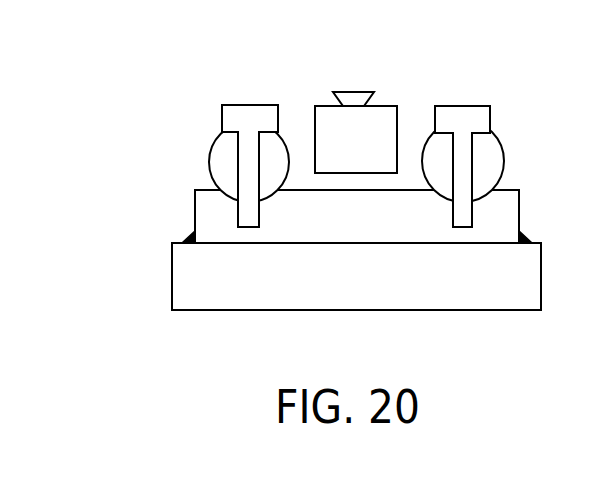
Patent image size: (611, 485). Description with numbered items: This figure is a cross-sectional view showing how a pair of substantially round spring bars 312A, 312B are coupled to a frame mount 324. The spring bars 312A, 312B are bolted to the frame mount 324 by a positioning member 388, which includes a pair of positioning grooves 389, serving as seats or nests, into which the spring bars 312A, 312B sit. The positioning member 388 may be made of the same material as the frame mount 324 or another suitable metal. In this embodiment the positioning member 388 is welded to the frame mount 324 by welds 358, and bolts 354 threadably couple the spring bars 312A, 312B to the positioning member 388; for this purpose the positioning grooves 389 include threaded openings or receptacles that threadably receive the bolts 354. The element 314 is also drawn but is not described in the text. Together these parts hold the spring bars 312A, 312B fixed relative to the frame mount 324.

The spring bar 312A is at (230, 157).
The spring bar 312B is at (487, 163).
The die / light emitting element 314 is at (381, 135).
The frame mount 324 is at (443, 278).
The bolts 354 is at (258, 113).
The welds 358 is at (188, 241).
The positioning member 388 is at (355, 217).
The positioning grooves 389 is at (266, 201).